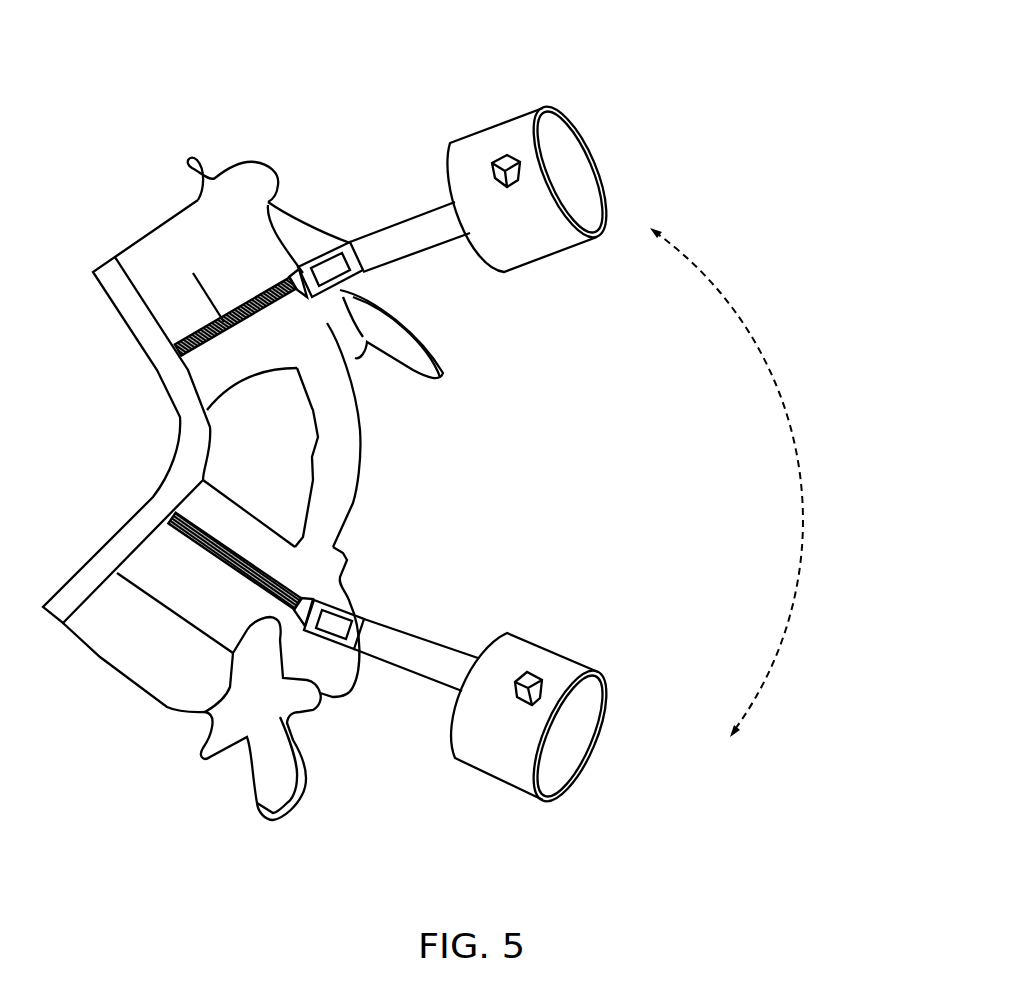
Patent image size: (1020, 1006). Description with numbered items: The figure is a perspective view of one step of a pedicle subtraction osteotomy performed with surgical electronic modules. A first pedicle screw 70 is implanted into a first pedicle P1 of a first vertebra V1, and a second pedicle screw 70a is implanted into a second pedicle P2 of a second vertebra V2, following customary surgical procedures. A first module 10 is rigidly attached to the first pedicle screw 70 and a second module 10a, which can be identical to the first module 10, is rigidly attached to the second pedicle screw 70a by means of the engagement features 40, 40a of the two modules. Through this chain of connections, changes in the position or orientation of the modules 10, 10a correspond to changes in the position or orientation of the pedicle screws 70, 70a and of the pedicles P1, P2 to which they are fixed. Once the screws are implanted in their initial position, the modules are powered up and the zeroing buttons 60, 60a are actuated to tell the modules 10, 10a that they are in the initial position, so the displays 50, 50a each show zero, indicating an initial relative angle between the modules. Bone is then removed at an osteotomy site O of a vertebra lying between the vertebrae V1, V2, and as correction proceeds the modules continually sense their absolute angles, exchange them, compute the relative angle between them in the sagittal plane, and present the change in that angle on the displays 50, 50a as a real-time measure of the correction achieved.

The module 10 is at (472, 152).
The second module 10a is at (485, 747).
The engagement feature 40 is at (342, 267).
The engagement feature 40a is at (333, 630).
The display 50 is at (563, 130).
The display 50a is at (583, 707).
The zeroing button 60 is at (500, 160).
The zeroing button 60a is at (532, 678).
The first pedicle screw 70 is at (223, 318).
The second pedicle screw 70a is at (213, 556).
The first vertebra V1 is at (175, 390).
The second vertebra V2 is at (170, 537).
The first pedicle P1 is at (256, 289).
The second pedicle P2 is at (299, 577).
The osteotomy site O is at (313, 437).